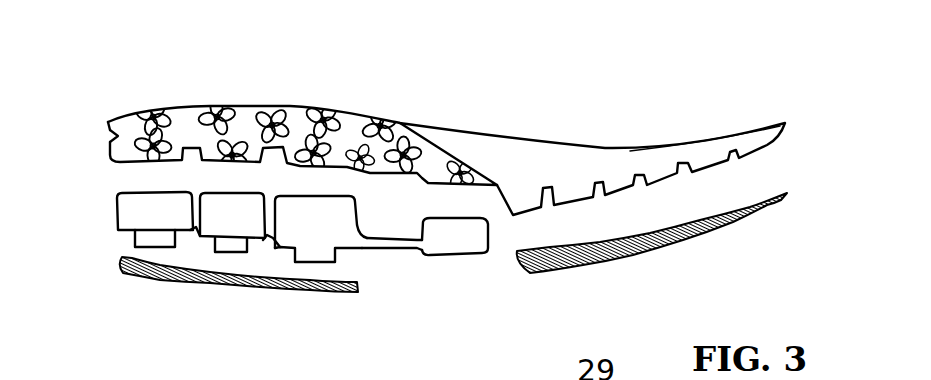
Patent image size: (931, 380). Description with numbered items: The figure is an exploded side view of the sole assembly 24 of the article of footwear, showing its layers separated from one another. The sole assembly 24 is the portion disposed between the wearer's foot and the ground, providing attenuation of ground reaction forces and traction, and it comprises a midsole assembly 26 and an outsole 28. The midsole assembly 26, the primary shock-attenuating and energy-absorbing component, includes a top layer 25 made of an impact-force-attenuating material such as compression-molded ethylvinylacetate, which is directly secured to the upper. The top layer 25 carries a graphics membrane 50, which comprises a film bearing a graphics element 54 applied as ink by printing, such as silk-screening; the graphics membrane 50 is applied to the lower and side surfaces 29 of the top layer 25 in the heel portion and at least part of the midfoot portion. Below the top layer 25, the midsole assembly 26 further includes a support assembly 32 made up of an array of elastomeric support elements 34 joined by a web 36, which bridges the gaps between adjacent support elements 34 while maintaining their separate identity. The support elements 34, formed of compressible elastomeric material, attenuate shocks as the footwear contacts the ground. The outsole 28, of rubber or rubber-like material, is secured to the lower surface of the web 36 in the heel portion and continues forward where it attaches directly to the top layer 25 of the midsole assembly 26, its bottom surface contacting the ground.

The sole assembly 24 is at (448, 111).
The top layer 25 is at (490, 138).
The midsole assembly 26 is at (98, 115).
The outsole 28 is at (277, 290).
The side surfaces 29 is at (348, 127).
The support assembly 32 is at (272, 271).
The support element 34 is at (472, 248).
The web 36 is at (392, 245).
The graphics membrane 50 is at (187, 118).
The graphics element 54 is at (121, 128).